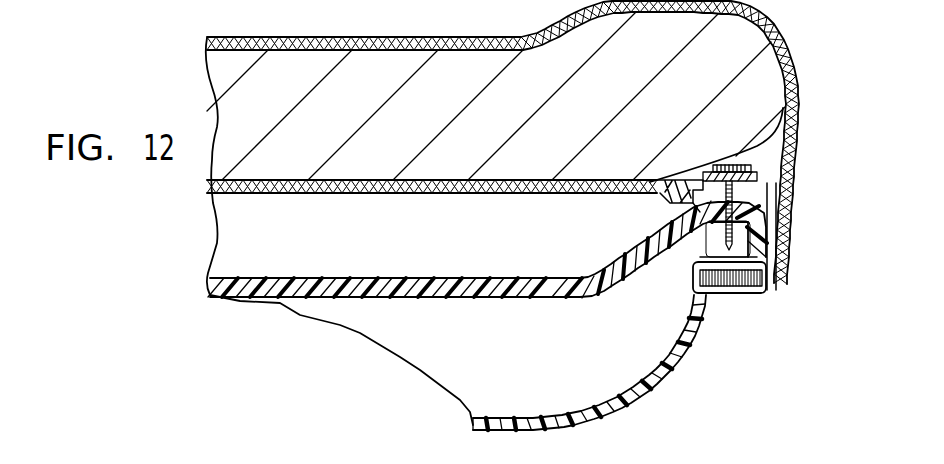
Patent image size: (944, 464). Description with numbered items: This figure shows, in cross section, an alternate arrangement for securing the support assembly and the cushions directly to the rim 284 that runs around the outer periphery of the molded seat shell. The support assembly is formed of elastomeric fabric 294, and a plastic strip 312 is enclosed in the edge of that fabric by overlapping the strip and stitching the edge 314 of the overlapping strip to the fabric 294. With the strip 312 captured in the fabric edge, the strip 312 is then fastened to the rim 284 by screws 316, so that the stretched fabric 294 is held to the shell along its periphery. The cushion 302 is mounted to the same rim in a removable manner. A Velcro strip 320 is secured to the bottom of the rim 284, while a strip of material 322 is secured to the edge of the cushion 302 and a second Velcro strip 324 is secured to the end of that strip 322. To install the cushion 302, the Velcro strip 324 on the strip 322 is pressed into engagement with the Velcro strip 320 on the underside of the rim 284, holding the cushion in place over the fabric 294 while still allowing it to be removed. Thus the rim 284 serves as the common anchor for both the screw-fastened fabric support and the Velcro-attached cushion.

The seat cushion 302 is at (272, 37).
The elastomeric fabric 294 is at (514, 194).
The edge 314 is at (670, 204).
The plastic strip 312 is at (787, 163).
The rim 284 is at (786, 203).
The screws 316 is at (778, 231).
The strip of material 322 is at (784, 255).
The Velcro strip 320 is at (737, 293).
The Velcro strip 324 is at (725, 292).